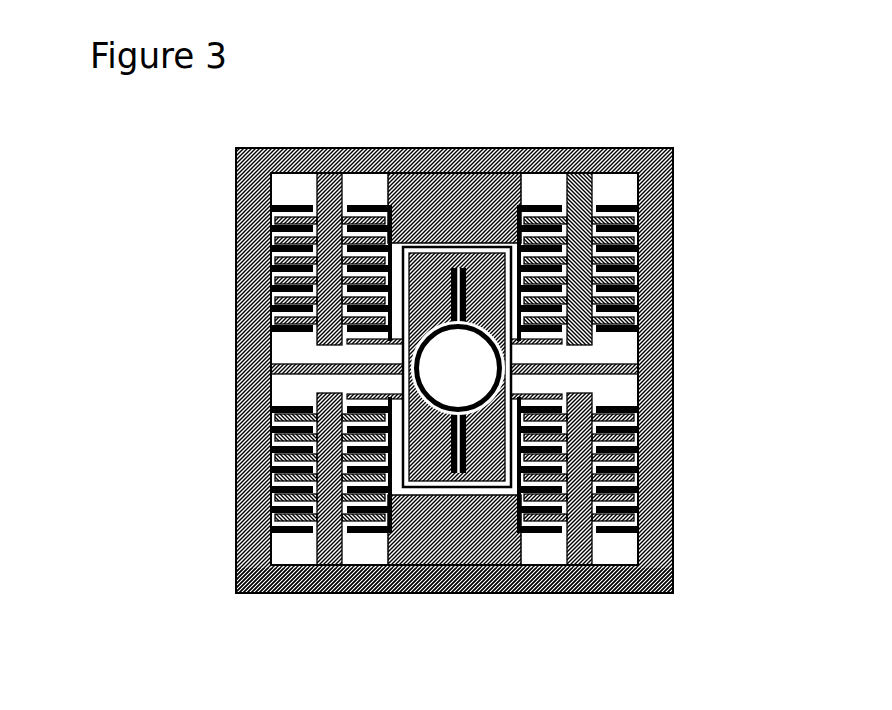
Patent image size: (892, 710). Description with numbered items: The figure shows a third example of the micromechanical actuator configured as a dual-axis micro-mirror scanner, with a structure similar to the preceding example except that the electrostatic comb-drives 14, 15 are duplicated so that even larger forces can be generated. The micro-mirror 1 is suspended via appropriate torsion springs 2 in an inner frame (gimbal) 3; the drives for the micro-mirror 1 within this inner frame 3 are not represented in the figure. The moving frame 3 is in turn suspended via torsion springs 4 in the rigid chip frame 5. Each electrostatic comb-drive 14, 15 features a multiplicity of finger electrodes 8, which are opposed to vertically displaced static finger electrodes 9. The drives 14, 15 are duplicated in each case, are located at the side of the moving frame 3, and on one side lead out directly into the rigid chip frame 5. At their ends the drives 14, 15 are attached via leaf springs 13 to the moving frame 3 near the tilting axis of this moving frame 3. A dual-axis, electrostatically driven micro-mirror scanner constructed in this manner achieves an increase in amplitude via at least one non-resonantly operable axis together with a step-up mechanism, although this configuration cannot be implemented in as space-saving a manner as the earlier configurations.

The micro-mirror 1 is at (460, 376).
The torsion springs 2 is at (440, 262).
The inner frame 3 is at (446, 268).
The torsion springs 4 is at (633, 362).
The rigid chip frame 5 is at (377, 590).
The finger electrodes 8 is at (272, 409).
The static finger electrodes 9 is at (272, 277).
The leaf springs 13 is at (357, 341).
The electrostatic comb-drive 14 is at (313, 196).
The electrostatic comb-drive 15 is at (330, 537).